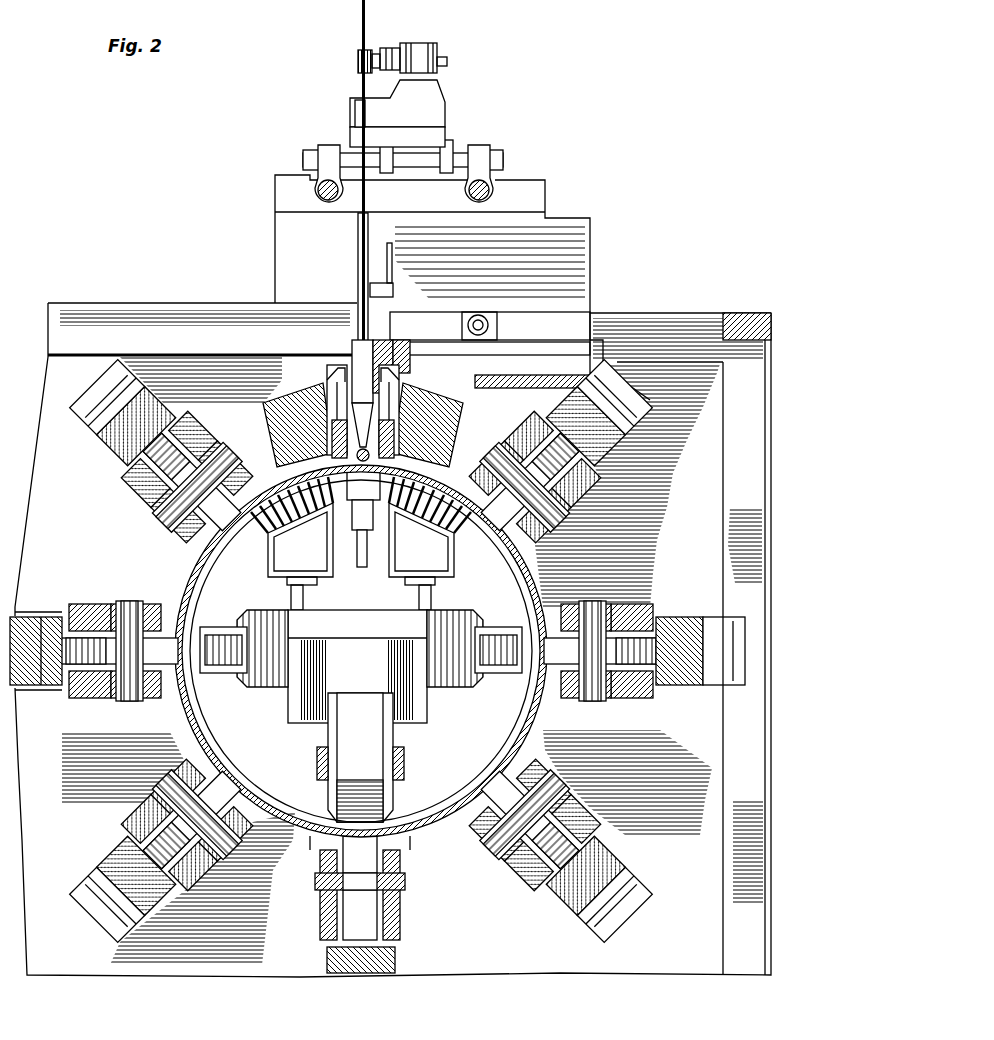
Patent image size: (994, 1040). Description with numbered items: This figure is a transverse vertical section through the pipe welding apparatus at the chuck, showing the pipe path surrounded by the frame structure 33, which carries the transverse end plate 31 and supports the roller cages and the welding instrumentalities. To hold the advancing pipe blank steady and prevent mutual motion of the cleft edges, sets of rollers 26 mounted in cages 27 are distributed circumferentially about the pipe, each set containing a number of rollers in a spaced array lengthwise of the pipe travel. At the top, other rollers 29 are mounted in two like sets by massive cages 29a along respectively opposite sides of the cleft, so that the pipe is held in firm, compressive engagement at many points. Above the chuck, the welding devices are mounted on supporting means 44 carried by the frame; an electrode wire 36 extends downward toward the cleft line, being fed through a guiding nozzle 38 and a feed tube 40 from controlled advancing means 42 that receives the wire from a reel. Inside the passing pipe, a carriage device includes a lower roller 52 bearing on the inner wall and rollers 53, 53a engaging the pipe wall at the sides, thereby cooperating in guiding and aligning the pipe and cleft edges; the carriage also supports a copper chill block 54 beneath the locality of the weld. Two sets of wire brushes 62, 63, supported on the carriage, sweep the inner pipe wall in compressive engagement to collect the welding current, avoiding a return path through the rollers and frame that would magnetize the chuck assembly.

The advancing means 42 is at (358, 58).
The supporting means 44 is at (275, 250).
The feed tube 40 is at (358, 240).
The transverse end plate 31 is at (80, 350).
The frame structure 33 is at (662, 312).
The guiding nozzle 38 is at (327, 384).
The electrode wire 36 is at (410, 404).
The rollers 29 is at (327, 435).
The cages 29a is at (264, 420).
The copper chill block 54 is at (378, 453).
The wire brushes 62 is at (265, 530).
The wire brushes 63 is at (458, 527).
The roller 53 is at (192, 637).
The roller 53a is at (522, 637).
The cages 27 is at (140, 478).
The rollers 26 is at (167, 688).
The lower roller 52 is at (383, 808).